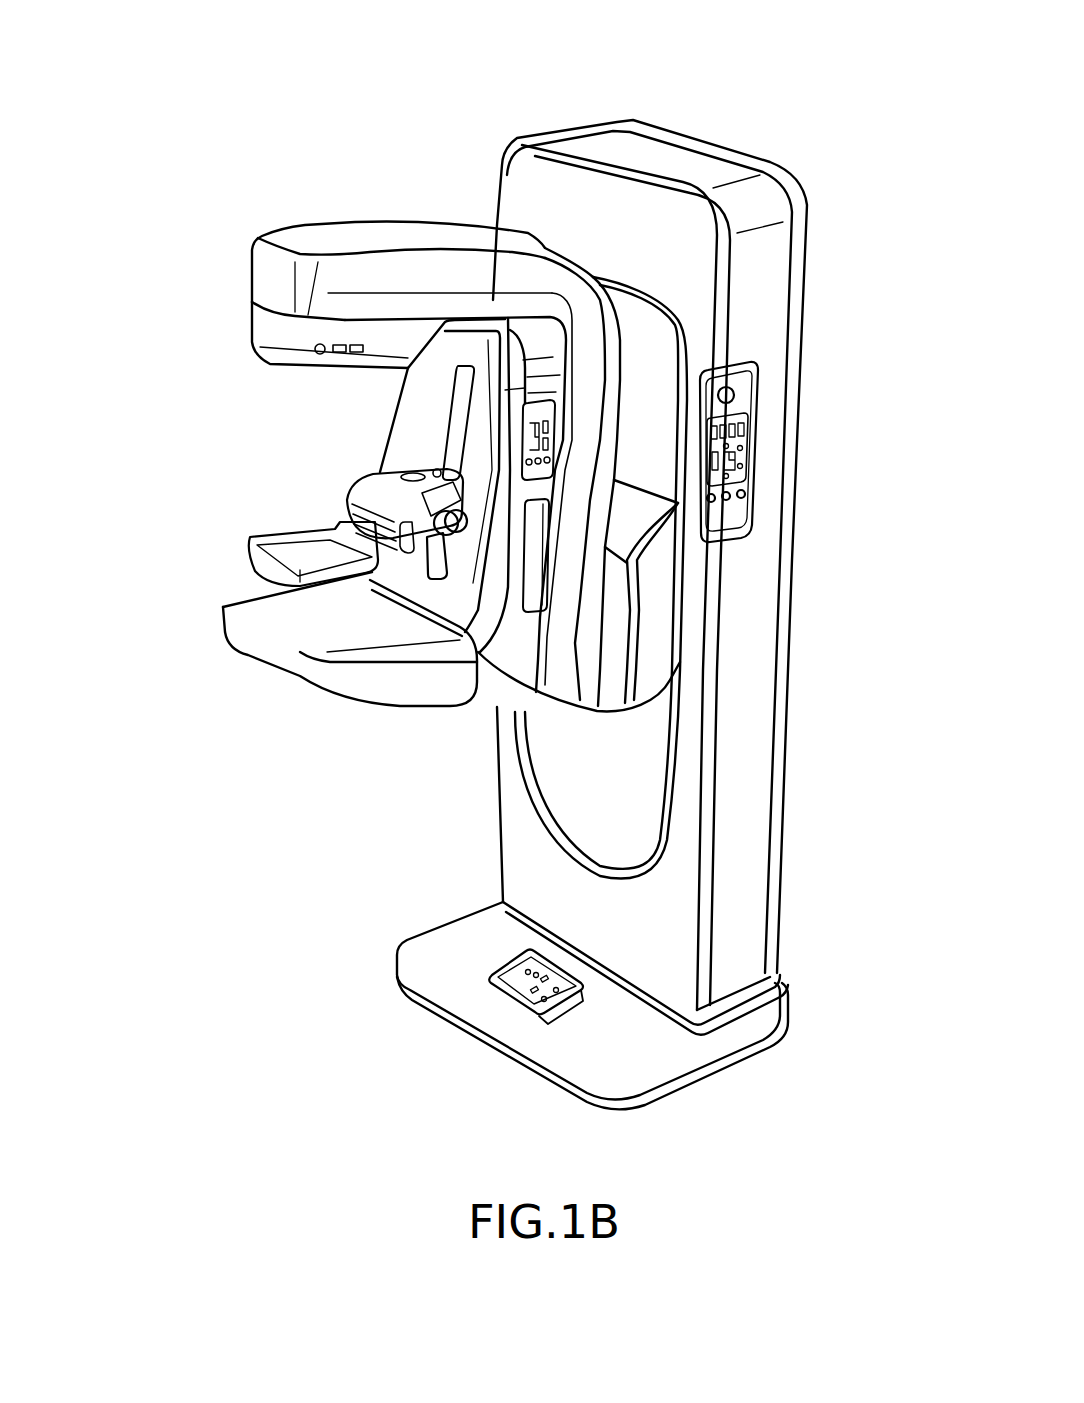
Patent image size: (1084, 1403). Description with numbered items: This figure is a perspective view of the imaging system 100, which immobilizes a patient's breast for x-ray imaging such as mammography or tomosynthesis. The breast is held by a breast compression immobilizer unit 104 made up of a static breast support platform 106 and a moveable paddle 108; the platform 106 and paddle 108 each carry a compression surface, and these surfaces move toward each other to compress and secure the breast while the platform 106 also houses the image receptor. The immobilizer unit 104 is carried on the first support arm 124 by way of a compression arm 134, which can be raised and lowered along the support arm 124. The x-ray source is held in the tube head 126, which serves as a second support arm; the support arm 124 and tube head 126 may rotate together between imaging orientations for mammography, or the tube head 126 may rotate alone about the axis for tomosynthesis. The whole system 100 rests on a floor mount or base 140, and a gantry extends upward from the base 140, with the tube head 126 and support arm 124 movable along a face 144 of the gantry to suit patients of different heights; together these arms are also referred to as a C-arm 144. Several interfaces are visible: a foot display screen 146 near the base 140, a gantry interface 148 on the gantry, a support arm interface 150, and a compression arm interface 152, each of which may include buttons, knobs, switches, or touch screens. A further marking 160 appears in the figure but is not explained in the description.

The imaging system 100 is at (818, 90).
The breast compression immobilizer unit 104 is at (222, 540).
The breast support platform 106 is at (282, 650).
The paddle 108 is at (254, 552).
The first support arm 124 is at (430, 405).
The tube head 126 is at (346, 245).
The compression arm 134 is at (372, 512).
The base 140 is at (660, 1061).
The gantry face 144 is at (645, 356).
The foot display screen 146 is at (522, 983).
The gantry interface 148 is at (747, 440).
The support arm interface 150 is at (548, 415).
The compression arm interface 152 is at (393, 478).
The movement direction indicator 160 is at (347, 598).